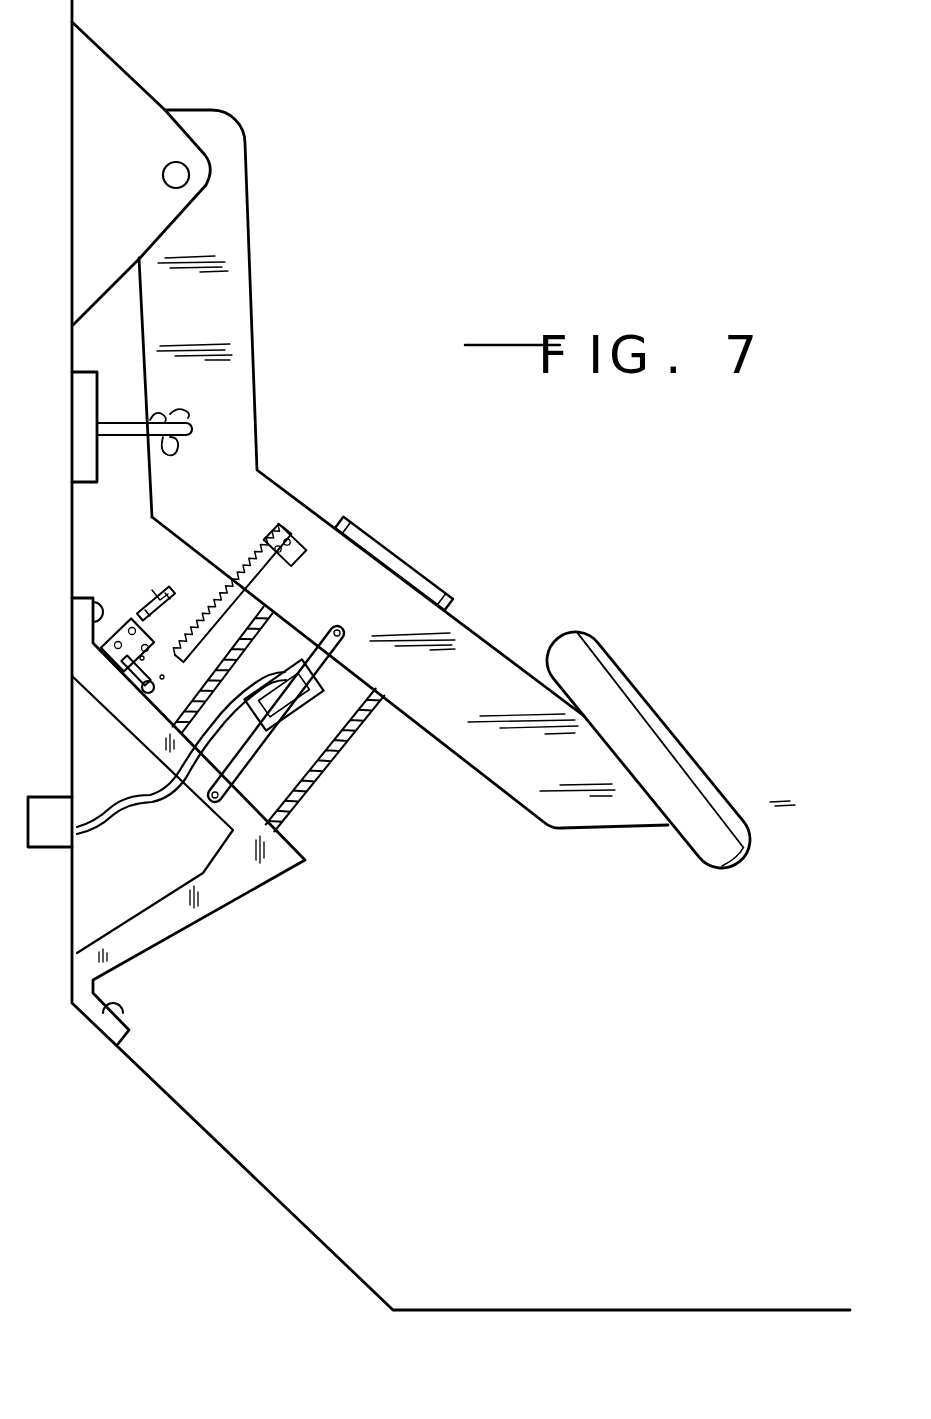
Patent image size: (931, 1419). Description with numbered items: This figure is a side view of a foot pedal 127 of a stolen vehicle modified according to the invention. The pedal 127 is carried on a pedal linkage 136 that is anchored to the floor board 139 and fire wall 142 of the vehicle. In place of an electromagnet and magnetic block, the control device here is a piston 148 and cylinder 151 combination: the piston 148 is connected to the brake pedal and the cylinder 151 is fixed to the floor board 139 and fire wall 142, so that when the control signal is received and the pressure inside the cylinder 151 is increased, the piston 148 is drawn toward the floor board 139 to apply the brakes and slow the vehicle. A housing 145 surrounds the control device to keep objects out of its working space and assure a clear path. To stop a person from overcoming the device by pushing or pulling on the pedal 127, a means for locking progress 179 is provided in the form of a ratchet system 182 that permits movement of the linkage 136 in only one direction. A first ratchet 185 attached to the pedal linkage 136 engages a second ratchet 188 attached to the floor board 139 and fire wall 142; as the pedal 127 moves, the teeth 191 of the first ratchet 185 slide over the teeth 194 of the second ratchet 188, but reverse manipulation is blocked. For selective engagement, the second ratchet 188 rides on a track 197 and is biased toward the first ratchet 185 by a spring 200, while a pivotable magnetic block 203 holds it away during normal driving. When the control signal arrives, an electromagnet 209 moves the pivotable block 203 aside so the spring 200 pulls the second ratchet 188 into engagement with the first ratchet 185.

The foot pedal 127 is at (733, 867).
The pedal linkage 136 is at (257, 565).
The floor board 139 is at (232, 1154).
The fire wall 142 is at (70, 358).
The housing 145 is at (313, 767).
The piston 148 is at (312, 754).
The cylinder 151 is at (290, 823).
The means for locking progress 179 is at (222, 545).
The ratchet system 182 is at (280, 572).
The first ratchet 185 is at (268, 540).
The second ratchet 188 is at (248, 615).
The teeth of the first ratchet 191 is at (336, 514).
The teeth of the second ratchet 194 is at (205, 626).
The track 197 is at (127, 678).
The spring 200 is at (127, 695).
The pivotable magnetic block 203 is at (140, 610).
The electromagnet 209 is at (165, 598).